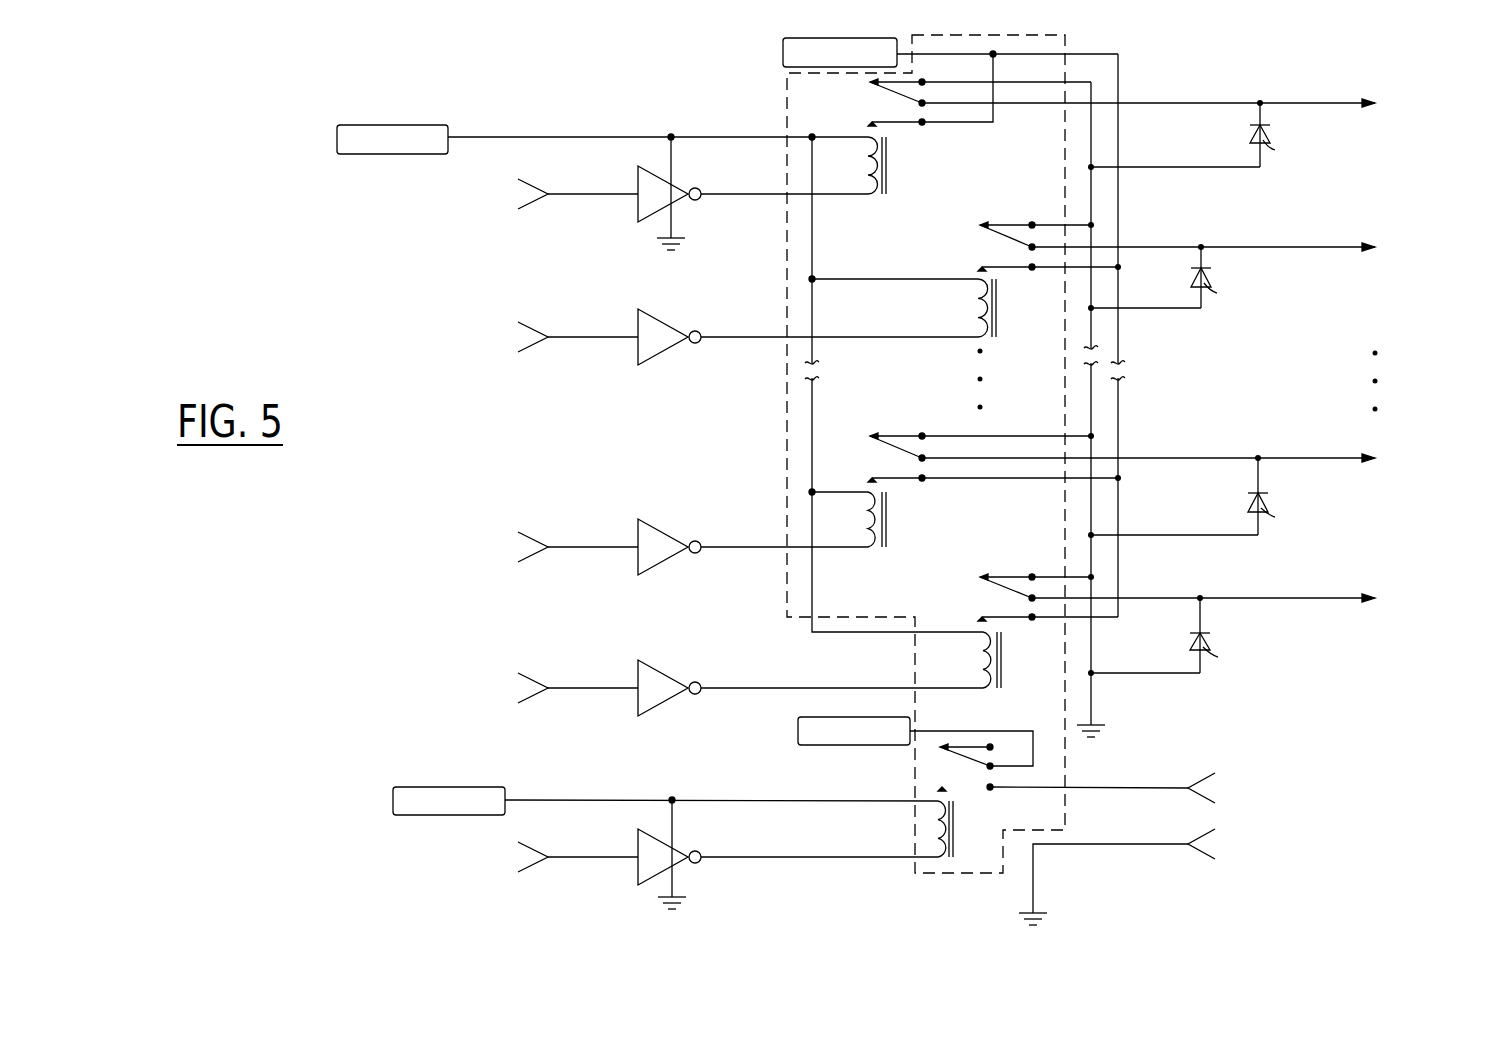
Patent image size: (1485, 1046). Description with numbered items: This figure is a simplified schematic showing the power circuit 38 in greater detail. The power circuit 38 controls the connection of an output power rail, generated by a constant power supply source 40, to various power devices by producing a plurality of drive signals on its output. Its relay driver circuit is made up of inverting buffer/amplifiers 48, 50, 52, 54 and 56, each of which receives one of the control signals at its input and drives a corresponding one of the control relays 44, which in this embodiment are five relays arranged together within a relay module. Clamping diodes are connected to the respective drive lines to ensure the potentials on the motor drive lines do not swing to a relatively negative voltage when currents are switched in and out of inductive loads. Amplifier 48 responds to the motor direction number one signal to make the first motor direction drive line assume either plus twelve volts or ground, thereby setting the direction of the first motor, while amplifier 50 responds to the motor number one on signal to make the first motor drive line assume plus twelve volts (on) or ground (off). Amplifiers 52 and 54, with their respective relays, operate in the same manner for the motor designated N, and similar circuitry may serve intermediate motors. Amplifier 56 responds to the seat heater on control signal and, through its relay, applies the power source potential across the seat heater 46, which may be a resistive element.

The power circuit 38 is at (1192, 59).
The constant power supply source 40 is at (405, 124).
The control relays 44 is at (787, 110).
The seat heater 46 is at (1164, 838).
The inverting buffer/amplifier 48 is at (638, 212).
The inverting buffer/amplifier 50 is at (638, 316).
The inverting buffer/amplifier 52 is at (638, 525).
The inverting buffer/amplifier 54 is at (638, 668).
The inverting buffer/amplifier 56 is at (638, 838).